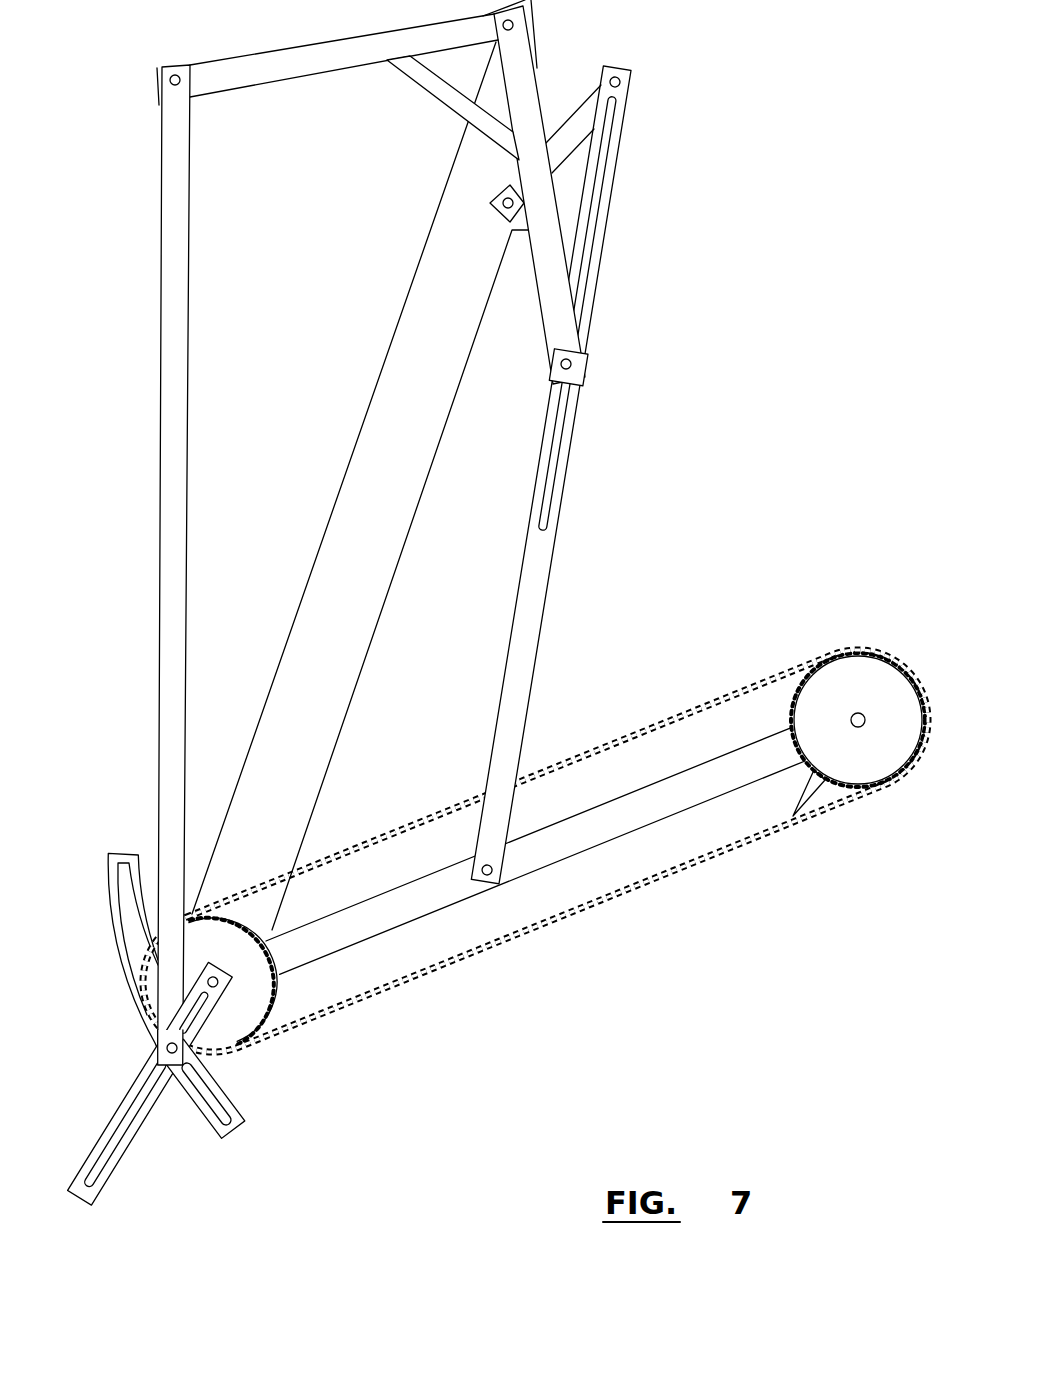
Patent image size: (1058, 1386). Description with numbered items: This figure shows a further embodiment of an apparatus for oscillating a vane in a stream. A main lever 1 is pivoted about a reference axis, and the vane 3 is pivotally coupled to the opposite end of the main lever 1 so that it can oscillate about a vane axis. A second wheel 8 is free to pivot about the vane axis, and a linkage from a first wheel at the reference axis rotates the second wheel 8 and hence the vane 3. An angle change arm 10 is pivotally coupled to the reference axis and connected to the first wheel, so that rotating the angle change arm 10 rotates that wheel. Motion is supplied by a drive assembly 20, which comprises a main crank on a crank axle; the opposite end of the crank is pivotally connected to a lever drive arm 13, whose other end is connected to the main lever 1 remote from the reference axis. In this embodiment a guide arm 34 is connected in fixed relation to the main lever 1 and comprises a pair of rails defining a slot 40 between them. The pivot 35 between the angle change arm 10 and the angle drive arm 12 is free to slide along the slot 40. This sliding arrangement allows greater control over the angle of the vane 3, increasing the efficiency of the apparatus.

The main lever 1 is at (602, 818).
The vane 3 is at (815, 792).
The second wheel 8 is at (862, 690).
The angle change arm 10 is at (120, 1165).
The angle drive arm 12 is at (167, 385).
The lever drive arm 13 is at (527, 650).
The drive assembly 20 is at (663, 65).
The guide arm 34 is at (238, 1133).
The pivot 35 is at (192, 1055).
The slot 40 is at (109, 868).